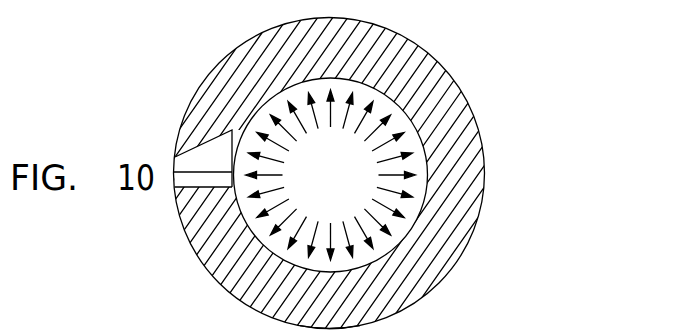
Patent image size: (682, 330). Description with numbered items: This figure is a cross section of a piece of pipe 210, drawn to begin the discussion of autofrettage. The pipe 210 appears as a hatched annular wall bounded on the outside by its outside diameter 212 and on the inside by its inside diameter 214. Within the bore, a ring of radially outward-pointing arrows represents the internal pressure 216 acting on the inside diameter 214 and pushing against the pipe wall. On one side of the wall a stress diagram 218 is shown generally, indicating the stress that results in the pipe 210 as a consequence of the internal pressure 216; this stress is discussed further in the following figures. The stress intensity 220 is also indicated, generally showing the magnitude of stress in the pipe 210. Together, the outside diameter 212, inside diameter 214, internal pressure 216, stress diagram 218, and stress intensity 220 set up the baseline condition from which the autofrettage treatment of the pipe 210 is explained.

The pipe 210 is at (483, 78).
The outside diameter 212 is at (478, 123).
The inside diameter 214 is at (428, 175).
The internal pressure 216 is at (380, 232).
The stress diagram 218 is at (203, 158).
The stress intensity 220 is at (435, 326).